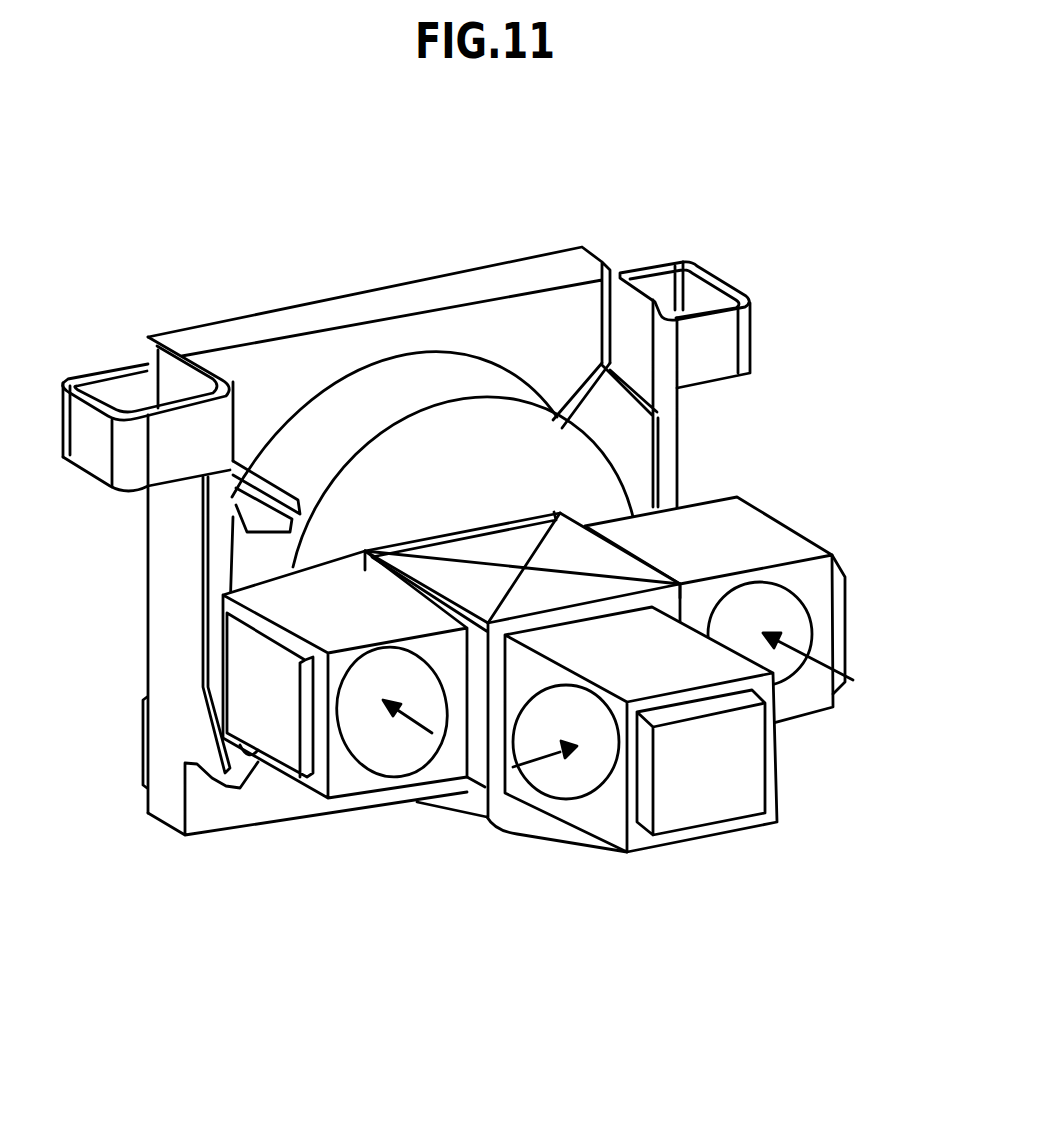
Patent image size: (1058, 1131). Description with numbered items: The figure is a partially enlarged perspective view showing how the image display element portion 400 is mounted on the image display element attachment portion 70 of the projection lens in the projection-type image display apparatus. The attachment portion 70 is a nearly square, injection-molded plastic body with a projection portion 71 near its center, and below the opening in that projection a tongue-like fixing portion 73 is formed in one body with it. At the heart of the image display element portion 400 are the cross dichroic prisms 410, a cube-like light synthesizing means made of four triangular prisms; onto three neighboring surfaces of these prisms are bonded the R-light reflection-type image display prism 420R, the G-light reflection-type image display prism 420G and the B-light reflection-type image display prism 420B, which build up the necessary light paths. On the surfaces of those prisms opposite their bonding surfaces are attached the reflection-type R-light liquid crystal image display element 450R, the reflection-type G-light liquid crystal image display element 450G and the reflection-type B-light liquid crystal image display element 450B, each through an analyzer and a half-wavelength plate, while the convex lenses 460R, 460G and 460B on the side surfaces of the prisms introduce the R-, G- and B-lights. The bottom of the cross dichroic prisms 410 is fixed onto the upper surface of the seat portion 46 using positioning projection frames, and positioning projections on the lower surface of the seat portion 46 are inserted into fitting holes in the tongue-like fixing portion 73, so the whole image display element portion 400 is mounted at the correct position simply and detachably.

The image display element attachment portion 70 is at (372, 289).
The projection portion 71 is at (412, 465).
The tongue-like fixing portion 73 is at (523, 822).
The seat portion 46 is at (467, 788).
The image display element portion 400 is at (492, 693).
The cross dichroic prisms 410 is at (463, 552).
The R-light reflection-type image display prism 420R is at (256, 723).
The reflection-type R-light liquid crystal image display element 450R is at (255, 700).
The convex lens 460R is at (367, 730).
The G-light reflection-type image display prism 420G is at (762, 607).
The reflection-type G-light liquid crystal image display element 450G is at (842, 602).
The convex lens 460G is at (773, 615).
The B-light reflection-type image display prism 420B is at (688, 791).
The reflection-type B-light liquid crystal image display element 450B is at (745, 783).
The convex lens 460B is at (572, 782).